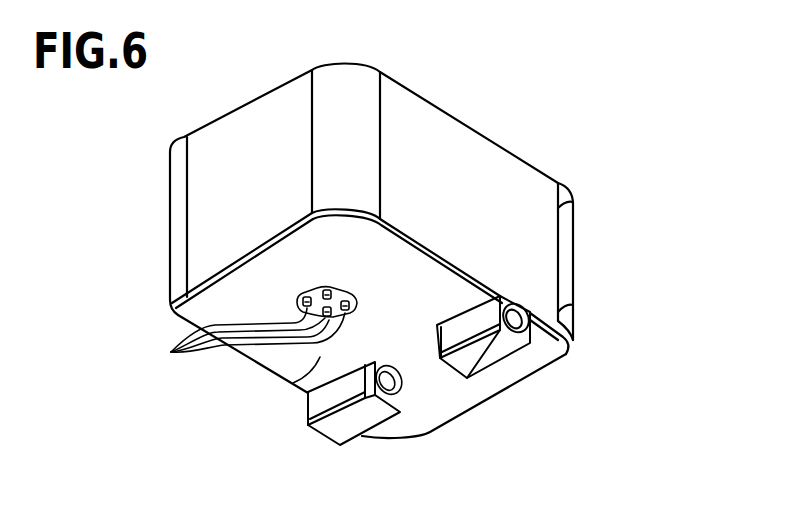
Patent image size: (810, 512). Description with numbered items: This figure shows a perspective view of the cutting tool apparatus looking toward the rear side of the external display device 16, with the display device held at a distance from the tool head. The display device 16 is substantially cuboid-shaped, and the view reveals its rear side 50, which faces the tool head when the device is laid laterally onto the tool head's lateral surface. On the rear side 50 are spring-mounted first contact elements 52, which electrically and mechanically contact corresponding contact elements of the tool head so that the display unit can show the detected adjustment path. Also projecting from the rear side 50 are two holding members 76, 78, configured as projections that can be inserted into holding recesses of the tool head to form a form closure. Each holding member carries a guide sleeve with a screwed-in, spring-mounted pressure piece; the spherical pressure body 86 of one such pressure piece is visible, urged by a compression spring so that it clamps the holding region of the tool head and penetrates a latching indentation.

The external display device 16 is at (391, 263).
The rear side 50 is at (317, 383).
The first contact elements 52 is at (171, 352).
The holding member 76 is at (505, 355).
The holding member 78 is at (329, 428).
The pressure body 86 is at (420, 428).